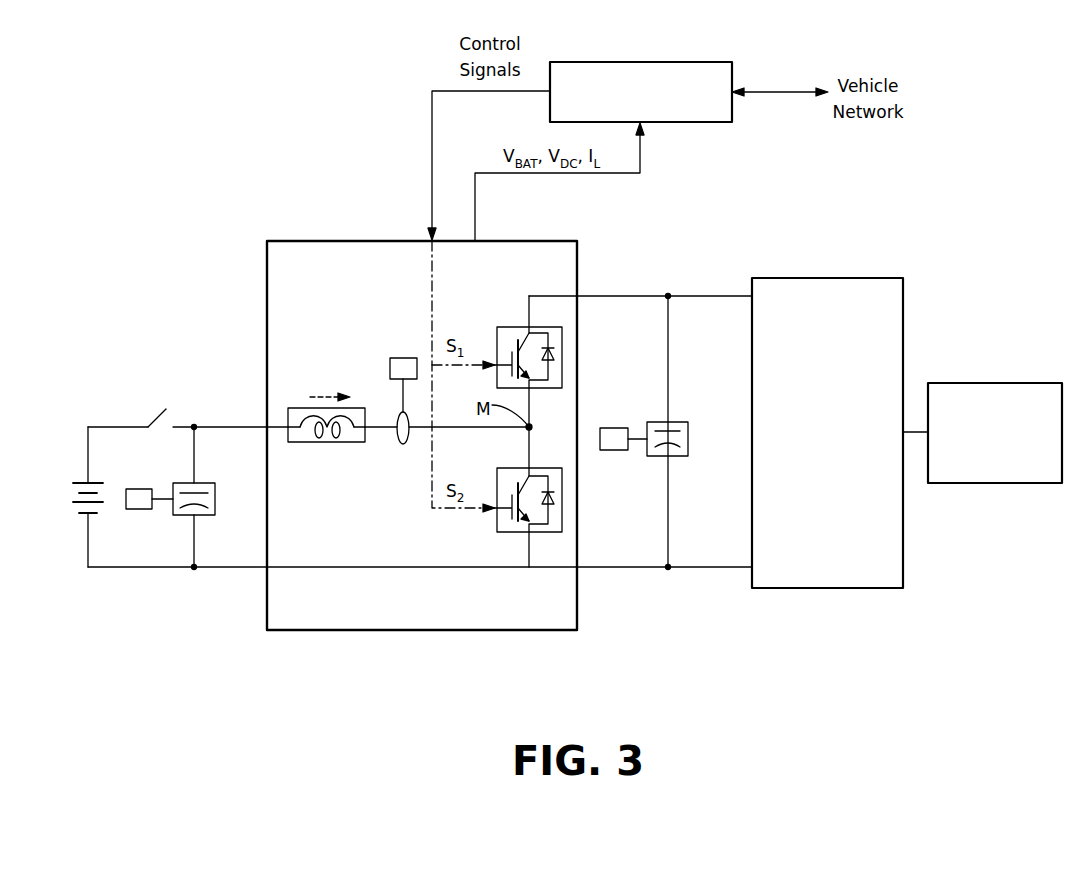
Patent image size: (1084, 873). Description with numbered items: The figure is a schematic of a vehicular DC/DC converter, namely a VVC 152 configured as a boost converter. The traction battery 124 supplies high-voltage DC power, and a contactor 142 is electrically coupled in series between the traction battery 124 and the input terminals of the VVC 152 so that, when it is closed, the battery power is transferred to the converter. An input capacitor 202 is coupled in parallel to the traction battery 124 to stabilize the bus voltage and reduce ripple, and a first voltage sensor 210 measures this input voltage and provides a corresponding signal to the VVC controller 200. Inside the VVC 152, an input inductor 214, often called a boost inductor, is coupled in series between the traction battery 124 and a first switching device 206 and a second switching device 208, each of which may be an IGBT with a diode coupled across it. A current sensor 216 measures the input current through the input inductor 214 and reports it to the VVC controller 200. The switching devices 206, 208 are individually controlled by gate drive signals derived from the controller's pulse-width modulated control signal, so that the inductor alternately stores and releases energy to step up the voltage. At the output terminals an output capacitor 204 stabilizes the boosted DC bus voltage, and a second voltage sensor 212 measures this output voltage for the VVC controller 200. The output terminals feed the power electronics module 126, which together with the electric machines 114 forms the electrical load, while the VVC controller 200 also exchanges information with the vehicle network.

The VVC controller 200 is at (640, 62).
The VVC 152 is at (425, 630).
The traction battery 124 is at (75, 496).
The contactor 142 is at (164, 413).
The first voltage sensor 210 is at (147, 489).
The input capacitor 202 is at (200, 483).
The input inductor 214 is at (327, 442).
The current sensor 216 is at (403, 358).
The first switching device 206 is at (520, 327).
The second switching device 208 is at (520, 468).
The second voltage sensor 212 is at (615, 428).
The output capacitor 204 is at (672, 422).
The power electronics module 126 is at (808, 278).
The electric machines 114 is at (975, 383).